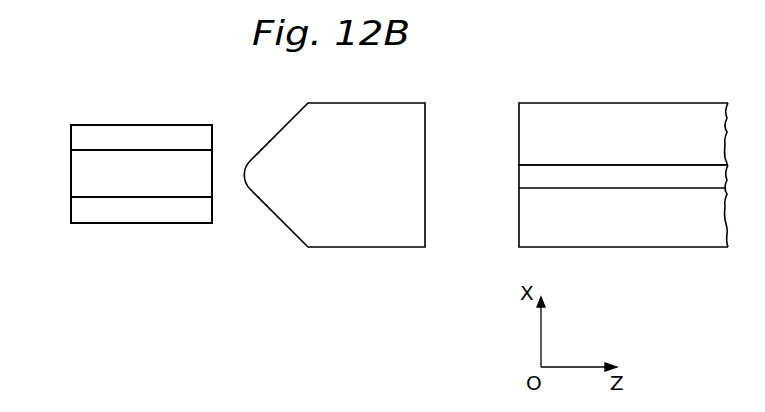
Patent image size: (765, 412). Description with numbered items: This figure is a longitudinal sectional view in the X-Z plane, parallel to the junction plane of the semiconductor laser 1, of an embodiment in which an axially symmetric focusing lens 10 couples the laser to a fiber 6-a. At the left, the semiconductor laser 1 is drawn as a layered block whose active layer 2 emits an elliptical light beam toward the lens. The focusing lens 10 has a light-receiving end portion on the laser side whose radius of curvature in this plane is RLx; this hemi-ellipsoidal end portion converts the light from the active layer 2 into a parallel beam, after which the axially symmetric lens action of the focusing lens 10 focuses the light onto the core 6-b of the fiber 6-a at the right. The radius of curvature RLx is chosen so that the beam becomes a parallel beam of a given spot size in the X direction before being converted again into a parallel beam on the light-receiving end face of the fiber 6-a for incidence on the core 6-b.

The semiconductor laser 1 is at (172, 126).
The active layer 2 is at (142, 199).
The focusing lens 10 is at (394, 103).
The radius of curvature in the X-Z plane RLx is at (257, 158).
The fiber 6-a is at (646, 103).
The core 6-b is at (635, 192).